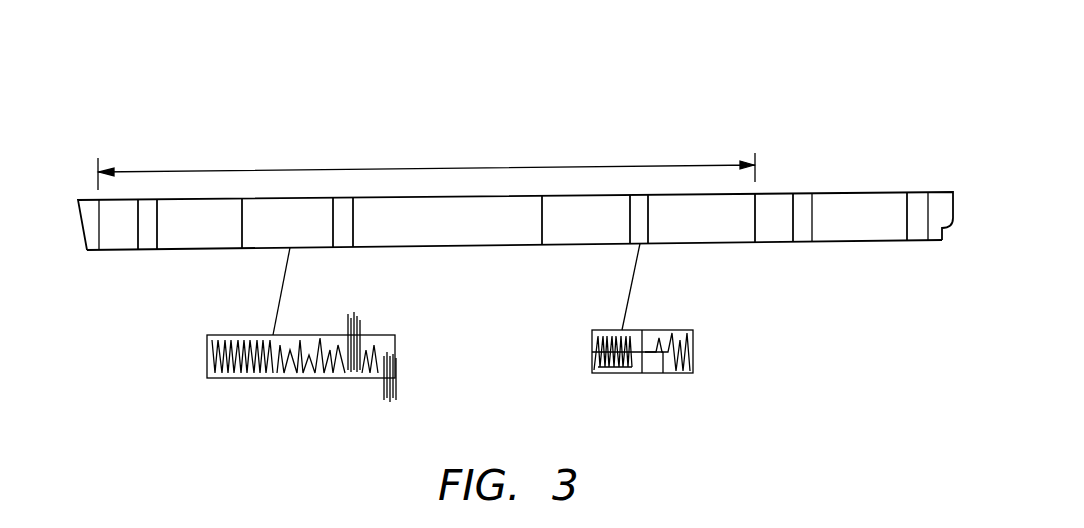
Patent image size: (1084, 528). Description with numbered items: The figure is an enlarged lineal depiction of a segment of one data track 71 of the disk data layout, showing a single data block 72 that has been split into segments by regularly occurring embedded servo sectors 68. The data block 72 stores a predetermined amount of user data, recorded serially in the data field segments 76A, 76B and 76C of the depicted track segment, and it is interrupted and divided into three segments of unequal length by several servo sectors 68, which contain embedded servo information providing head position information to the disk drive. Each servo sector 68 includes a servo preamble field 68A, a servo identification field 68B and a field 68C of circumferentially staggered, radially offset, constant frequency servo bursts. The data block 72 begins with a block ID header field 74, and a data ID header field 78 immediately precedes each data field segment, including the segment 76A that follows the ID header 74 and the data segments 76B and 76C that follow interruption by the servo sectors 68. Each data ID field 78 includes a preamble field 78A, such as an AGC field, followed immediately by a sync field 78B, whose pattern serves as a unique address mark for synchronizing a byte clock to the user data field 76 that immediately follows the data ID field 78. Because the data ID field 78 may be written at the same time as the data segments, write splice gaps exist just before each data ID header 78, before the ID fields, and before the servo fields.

The embedded servo sector 68 is at (277, 207).
The servo preamble field 68A is at (238, 380).
The servo identification field 68B is at (305, 380).
The servo burst field 68C is at (342, 380).
The data track 71 is at (70, 242).
The data block 72 is at (512, 168).
The block ID header field 74 is at (120, 247).
The user data field 76 is at (444, 264).
The first data field segment 76A is at (210, 207).
The second data field segment 76B is at (412, 207).
The third data field segment 76C is at (702, 197).
The data ID header field 78 is at (147, 198).
The preamble field 78A is at (597, 373).
The sync field 78B is at (670, 373).